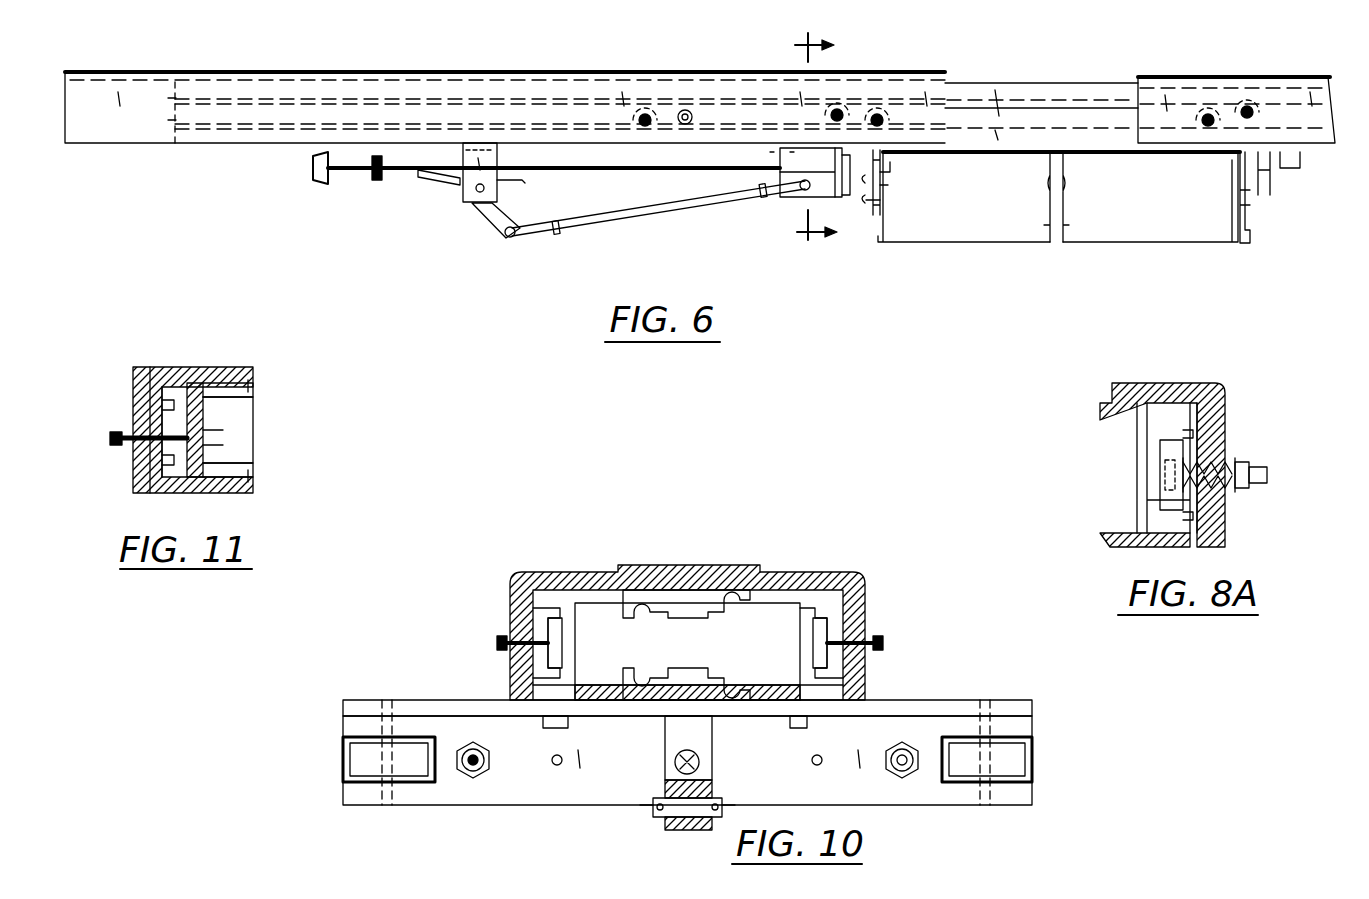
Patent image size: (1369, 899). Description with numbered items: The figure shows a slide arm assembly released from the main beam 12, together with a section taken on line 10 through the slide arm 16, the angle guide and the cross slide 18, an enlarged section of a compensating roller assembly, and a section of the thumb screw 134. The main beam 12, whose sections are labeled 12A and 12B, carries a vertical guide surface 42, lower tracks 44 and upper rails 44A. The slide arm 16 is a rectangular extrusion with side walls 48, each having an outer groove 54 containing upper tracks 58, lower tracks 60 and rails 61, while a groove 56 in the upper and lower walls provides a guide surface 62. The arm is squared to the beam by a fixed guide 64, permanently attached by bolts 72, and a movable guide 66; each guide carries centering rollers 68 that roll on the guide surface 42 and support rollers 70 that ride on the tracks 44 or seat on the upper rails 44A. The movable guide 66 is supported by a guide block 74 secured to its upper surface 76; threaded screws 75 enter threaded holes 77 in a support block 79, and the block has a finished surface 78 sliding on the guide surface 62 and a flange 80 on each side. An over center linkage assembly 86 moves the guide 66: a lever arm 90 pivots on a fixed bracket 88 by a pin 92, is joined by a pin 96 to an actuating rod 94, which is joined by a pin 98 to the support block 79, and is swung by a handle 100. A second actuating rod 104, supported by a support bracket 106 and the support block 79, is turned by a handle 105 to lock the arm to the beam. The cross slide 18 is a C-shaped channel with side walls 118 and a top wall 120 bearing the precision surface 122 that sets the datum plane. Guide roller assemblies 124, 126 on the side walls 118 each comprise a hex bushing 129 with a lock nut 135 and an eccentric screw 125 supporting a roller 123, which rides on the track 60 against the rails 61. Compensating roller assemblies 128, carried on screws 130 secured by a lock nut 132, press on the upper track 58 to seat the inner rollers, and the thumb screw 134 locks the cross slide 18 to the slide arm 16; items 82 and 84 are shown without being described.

In FIG. 6, the section line 10— 10 is at (820, 139).
In FIG. 6, the main beam 12 is at (1059, 226).
In FIG. 6, the frame member 12A is at (1130, 248).
In FIG. 6, the frame member 12B is at (975, 248).
In FIG. 6, the slide arm 16 is at (168, 138).
In FIG. 11, the slide arm 16 is at (172, 495).
In FIG. 8A, the slide arm 16 is at (1195, 535).
In FIG. 10, the slide arm 16 is at (805, 572).
In FIG. 6, the cross slide 18 is at (430, 70).
In FIG. 11, the cross slide 18 is at (192, 363).
In FIG. 8A, the cross slide 18 is at (1222, 384).
In FIG. 10, the cross slide 18 is at (855, 567).
In FIG. 6, the vertical guide surface 42 is at (885, 178).
In FIG. 6, the lower tracks 44 is at (866, 197).
In FIG. 6, the upper rails 44A is at (890, 162).
In FIG. 11, the side walls 48 is at (212, 448).
In FIG. 6, the groove 54 is at (1080, 111).
In FIG. 10, the groove 56 is at (678, 582).
In FIG. 11, the upper tracks 58 is at (223, 423).
In FIG. 11, the lower tracks 60 is at (210, 450).
In FIG. 11, the upper and lower rails 61 is at (160, 408).
In FIG. 8A, the upper and lower rails 61 is at (1195, 455).
In FIG. 10, the guide surface 62 is at (700, 685).
In FIG. 6, the fixed guide 64 is at (1268, 200).
In FIG. 10, the movable guide 66 is at (1048, 688).
In FIG. 6, the centering rollers 68 is at (870, 160).
In FIG. 10, the centering rollers 68 is at (343, 764).
In FIG. 10, the support rollers 70 is at (470, 772).
In FIG. 6, the bolts 72 is at (1298, 165).
In FIG. 6, the guide block 74 is at (757, 151).
In FIG. 10, the guide block 74 is at (717, 688).
In FIG. 10, the threaded screws 75 is at (657, 752).
In FIG. 10, the upper surface 76 is at (973, 698).
In FIG. 10, the threaded holes 77 is at (712, 740).
In FIG. 10, the finished surface 78 is at (690, 690).
In FIG. 6, the support block 79 is at (835, 198).
In FIG. 10, the support block 79 is at (663, 786).
In FIG. 10, the flange 80 is at (743, 687).
In FIG. 10, the hanger 82 is at (550, 730).
In FIG. 10, the screw 84 is at (544, 730).
In FIG. 6, the over center linkage assembly 86 is at (588, 232).
In FIG. 6, the fixed bracket 88 is at (514, 184).
In FIG. 6, the lever arm 90 is at (502, 215).
In FIG. 6, the pin 92 is at (470, 200).
In FIG. 6, the actuating rod 94 is at (680, 210).
In FIG. 10, the actuating rod 94 is at (668, 820).
In FIG. 6, the pin 96 is at (506, 240).
In FIG. 6, the pin 98 is at (795, 192).
In FIG. 10, the pin 98 is at (652, 810).
In FIG. 6, the handle 100 is at (447, 185).
In FIG. 6, the actuating rod 104 is at (392, 182).
In FIG. 10, the actuating rod 104 is at (675, 768).
In FIG. 6, the handle 105 is at (312, 163).
In FIG. 6, the support bracket 106 is at (380, 152).
In FIG. 11, the side walls 118 is at (138, 374).
In FIG. 8A, the side walls 118 is at (1226, 542).
In FIG. 10, the side walls 118 is at (510, 590).
In FIG. 11, the top wall 120 is at (225, 369).
In FIG. 10, the precision extruded surface 122 is at (755, 559).
In FIG. 8A, the roller 123 is at (1158, 457).
In FIG. 6, the inner guide roller assembly 124 is at (880, 113).
In FIG. 8A, the eccentric screw 125 is at (1266, 480).
In FIG. 6, the guide roller assembly 126 is at (645, 112).
In FIG. 6, the compensating roller assembly 128 is at (840, 108).
In FIG. 10, the compensating roller assembly 128 is at (556, 618).
In FIG. 8A, the hex bushing 129 is at (1238, 468).
In FIG. 10, the screw 130 is at (495, 641).
In FIG. 10, the lock nut 132 is at (506, 637).
In FIG. 6, the thumb screw 134 is at (688, 110).
In FIG. 11, the thumb screw 134 is at (110, 438).
In FIG. 8A, the lock nut 135 is at (1240, 467).